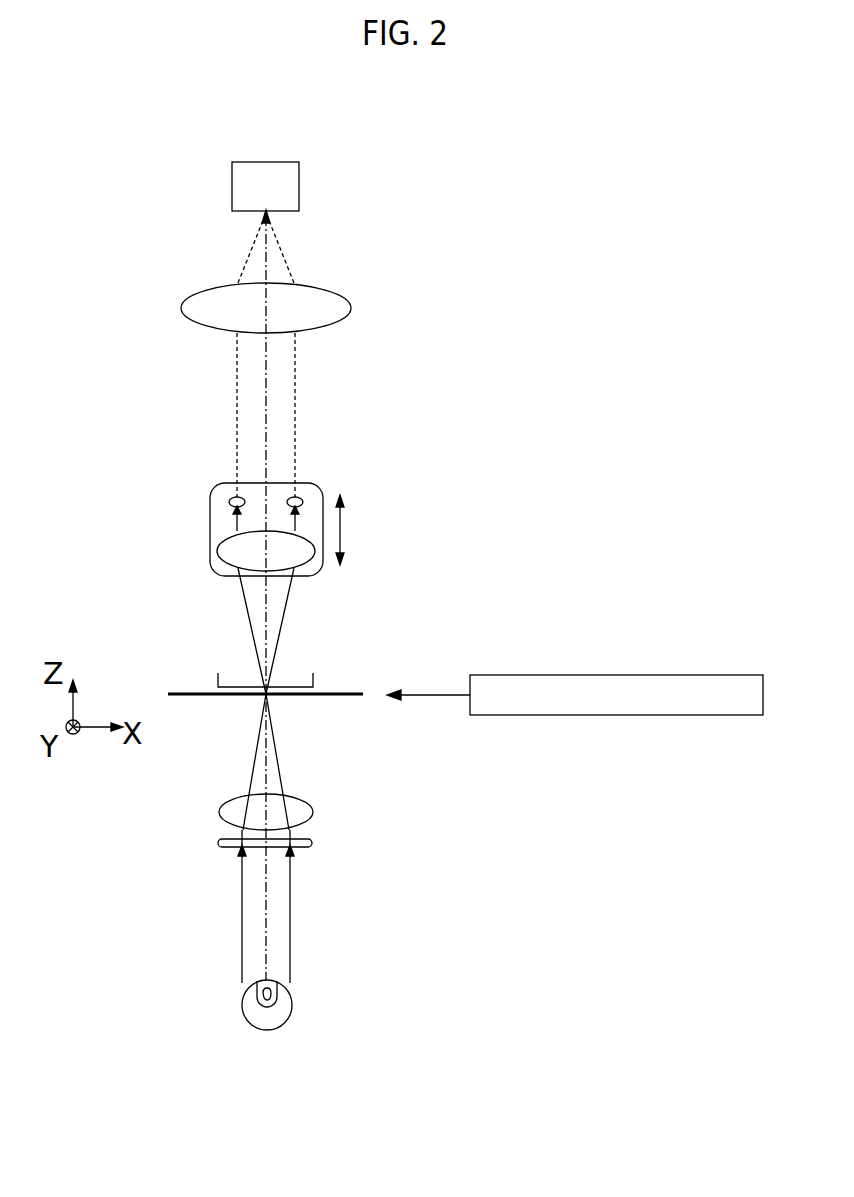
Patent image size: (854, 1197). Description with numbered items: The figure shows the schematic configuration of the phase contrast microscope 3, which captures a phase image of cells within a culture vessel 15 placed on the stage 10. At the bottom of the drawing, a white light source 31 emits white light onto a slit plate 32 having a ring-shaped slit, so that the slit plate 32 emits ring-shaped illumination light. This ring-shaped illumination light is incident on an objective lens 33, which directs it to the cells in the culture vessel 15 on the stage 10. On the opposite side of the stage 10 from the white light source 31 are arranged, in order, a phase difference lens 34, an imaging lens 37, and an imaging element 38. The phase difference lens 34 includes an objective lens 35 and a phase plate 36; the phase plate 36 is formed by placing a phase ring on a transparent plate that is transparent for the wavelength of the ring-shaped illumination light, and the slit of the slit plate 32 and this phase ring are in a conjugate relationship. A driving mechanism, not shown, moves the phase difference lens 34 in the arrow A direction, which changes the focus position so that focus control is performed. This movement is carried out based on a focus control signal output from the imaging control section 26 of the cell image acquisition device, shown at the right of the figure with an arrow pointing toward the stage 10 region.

The phase contrast microscope 3 is at (119, 138).
The stage 10 is at (338, 697).
The culture vessel 15 is at (315, 676).
The imaging control section 26 is at (490, 716).
The white light source 31 is at (243, 1005).
The slit plate 32 is at (316, 843).
The objective lens 33 is at (219, 812).
The phase difference lens 34 is at (210, 553).
The objective lens 35 is at (223, 542).
The phase plate 36 is at (229, 503).
The imaging lens 37 is at (181, 308).
The imaging element 38 is at (232, 180).
The arrow A direction A is at (344, 542).